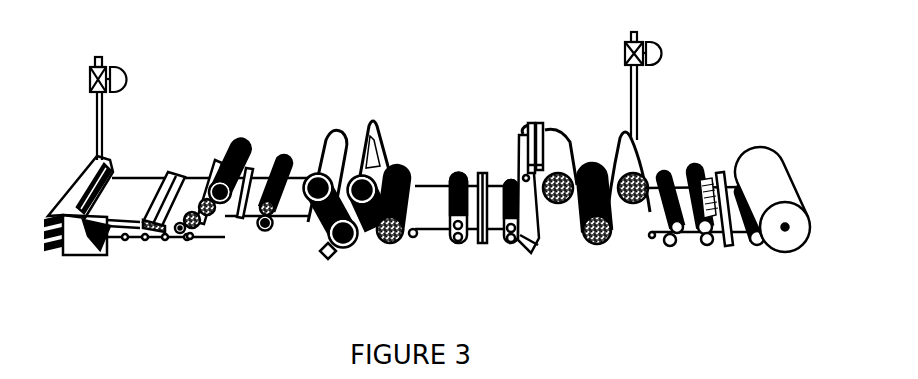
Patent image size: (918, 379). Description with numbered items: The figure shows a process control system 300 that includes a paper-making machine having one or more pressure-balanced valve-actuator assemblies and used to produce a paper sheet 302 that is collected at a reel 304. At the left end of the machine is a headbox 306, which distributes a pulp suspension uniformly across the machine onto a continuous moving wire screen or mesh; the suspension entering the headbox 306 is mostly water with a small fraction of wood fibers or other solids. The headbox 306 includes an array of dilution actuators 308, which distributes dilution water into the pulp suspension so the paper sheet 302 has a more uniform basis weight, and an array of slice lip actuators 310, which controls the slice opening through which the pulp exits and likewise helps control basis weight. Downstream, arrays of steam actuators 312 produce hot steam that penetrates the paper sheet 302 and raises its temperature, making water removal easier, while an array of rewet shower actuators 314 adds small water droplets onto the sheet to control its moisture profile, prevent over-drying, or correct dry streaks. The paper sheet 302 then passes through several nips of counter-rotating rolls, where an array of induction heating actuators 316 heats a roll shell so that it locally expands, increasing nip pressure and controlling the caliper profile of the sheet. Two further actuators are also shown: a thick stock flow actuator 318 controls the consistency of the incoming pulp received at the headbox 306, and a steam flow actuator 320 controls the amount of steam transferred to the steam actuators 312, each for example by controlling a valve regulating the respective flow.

The process control system 300 is at (570, 348).
The paper sheet 302 is at (242, 220).
The reel 304 is at (788, 254).
The headbox 306 is at (63, 182).
The dilution actuators 308 is at (47, 260).
The slice lip actuators 310 is at (108, 152).
The steam actuators 312 is at (212, 230).
The rewet shower actuators 314 is at (328, 264).
The induction heating actuators 316 is at (722, 240).
The thick stock flow actuator 318 is at (110, 54).
The steam flow actuator 320 is at (648, 40).